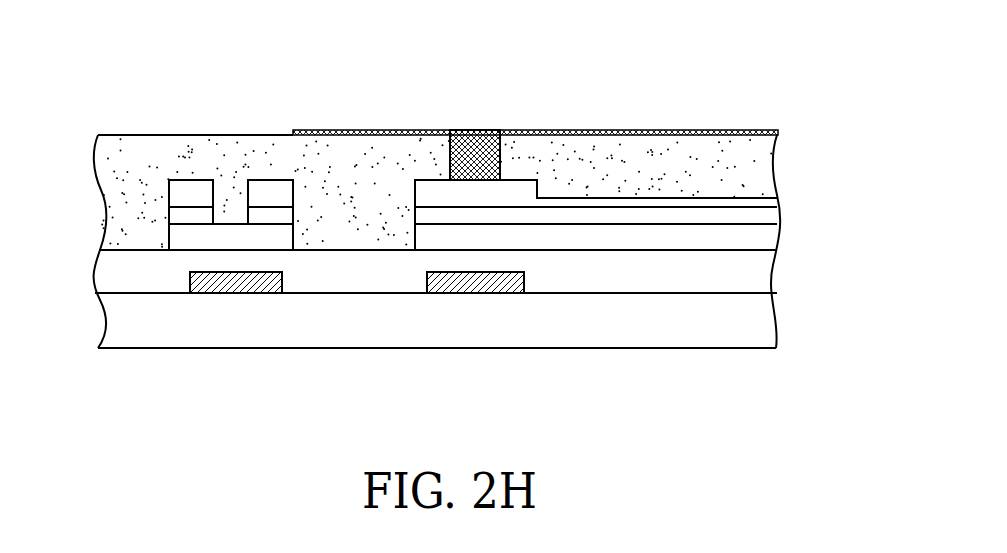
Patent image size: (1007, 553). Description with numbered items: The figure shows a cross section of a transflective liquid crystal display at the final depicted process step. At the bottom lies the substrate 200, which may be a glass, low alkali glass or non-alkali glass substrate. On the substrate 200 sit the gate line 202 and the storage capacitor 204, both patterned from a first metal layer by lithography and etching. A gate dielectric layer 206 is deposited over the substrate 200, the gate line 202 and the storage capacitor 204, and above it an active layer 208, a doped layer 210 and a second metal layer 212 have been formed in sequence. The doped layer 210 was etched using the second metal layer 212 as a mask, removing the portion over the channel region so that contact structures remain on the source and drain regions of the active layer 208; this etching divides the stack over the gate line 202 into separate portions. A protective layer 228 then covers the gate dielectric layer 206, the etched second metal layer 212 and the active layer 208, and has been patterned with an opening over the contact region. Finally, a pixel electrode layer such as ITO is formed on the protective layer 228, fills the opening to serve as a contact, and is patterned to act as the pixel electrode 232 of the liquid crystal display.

The substrate 200 is at (753, 322).
The gate line 202 is at (237, 280).
The storage capacitor 204 is at (482, 280).
The gate dielectric layer 206 is at (753, 270).
The active layer 208 is at (160, 237).
The doped layer 210 is at (160, 208).
The second metal layer 212 is at (160, 192).
The protective layer 228 is at (123, 152).
The pixel electrode 232 is at (482, 135).